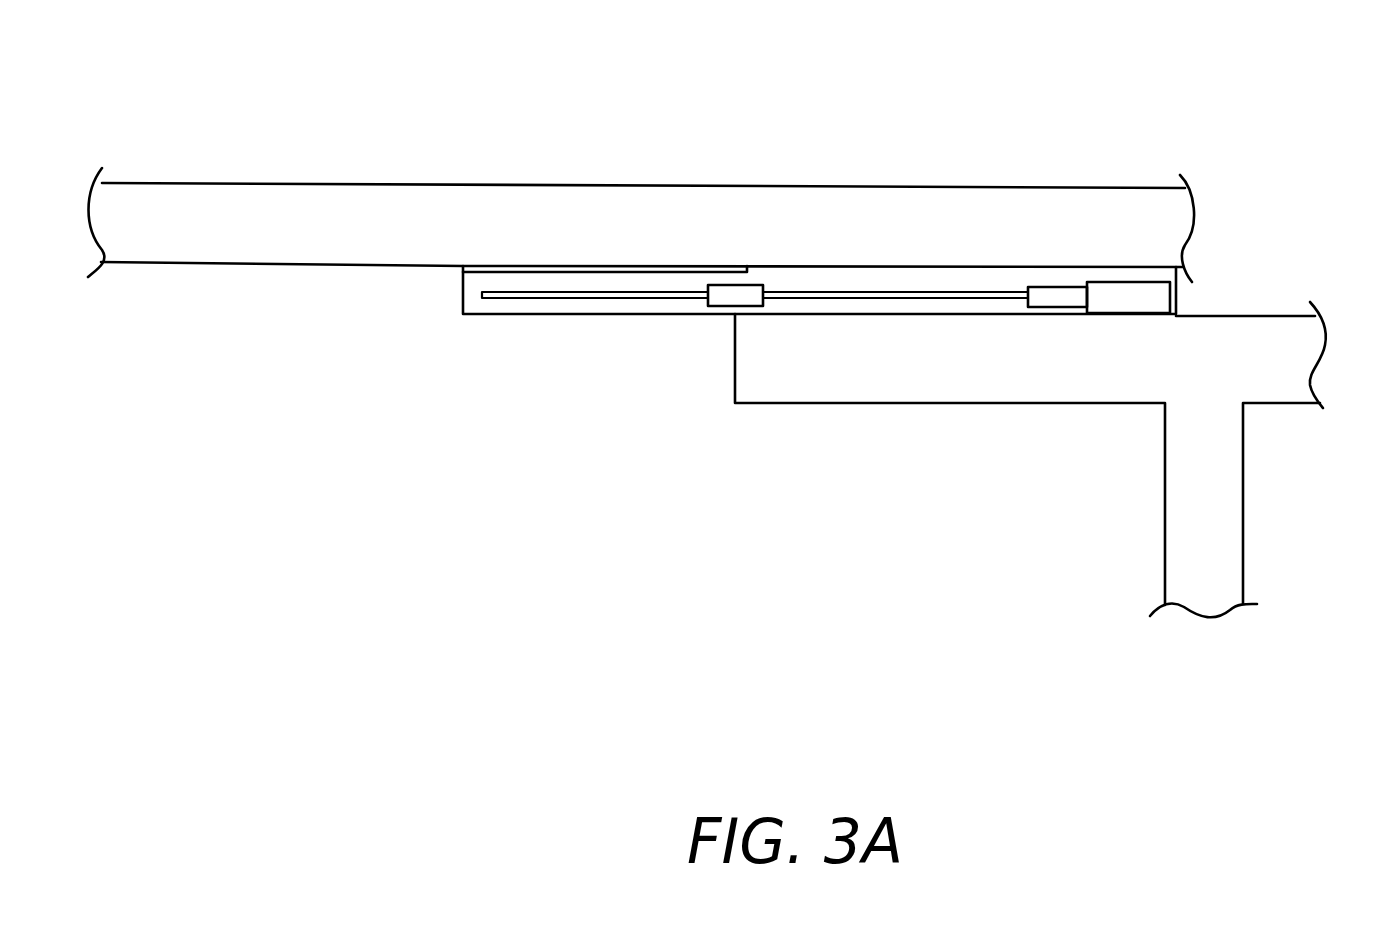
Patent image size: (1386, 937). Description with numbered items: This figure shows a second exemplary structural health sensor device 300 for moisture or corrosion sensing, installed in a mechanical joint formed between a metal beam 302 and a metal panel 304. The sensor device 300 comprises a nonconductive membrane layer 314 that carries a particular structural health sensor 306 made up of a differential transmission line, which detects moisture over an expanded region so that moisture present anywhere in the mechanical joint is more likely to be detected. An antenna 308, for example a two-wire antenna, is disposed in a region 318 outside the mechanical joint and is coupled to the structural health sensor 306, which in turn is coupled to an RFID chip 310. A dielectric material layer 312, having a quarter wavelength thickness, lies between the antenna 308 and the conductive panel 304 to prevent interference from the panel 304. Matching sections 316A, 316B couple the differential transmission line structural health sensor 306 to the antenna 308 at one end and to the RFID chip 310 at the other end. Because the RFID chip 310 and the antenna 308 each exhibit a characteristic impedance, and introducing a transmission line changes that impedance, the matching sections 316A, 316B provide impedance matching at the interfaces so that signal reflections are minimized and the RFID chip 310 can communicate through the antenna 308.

The structural health sensor device 300 is at (1203, 288).
The metal beam 302 is at (1245, 490).
The metal panel 304 is at (865, 187).
The structural health sensor 306 is at (872, 294).
The antenna 308 is at (590, 293).
The RFID chip 310 is at (1117, 286).
The dielectric material layer 312 is at (503, 266).
The nonconductive membrane layer 314 is at (462, 287).
The matching section 316A is at (730, 296).
The matching section 316B is at (1048, 297).
The region outside the mechanical joint 318 is at (590, 342).